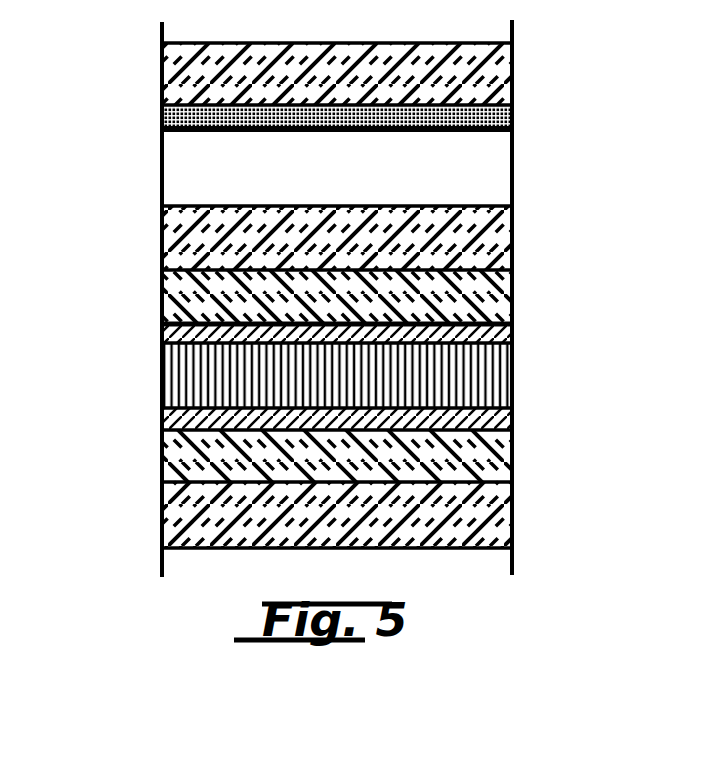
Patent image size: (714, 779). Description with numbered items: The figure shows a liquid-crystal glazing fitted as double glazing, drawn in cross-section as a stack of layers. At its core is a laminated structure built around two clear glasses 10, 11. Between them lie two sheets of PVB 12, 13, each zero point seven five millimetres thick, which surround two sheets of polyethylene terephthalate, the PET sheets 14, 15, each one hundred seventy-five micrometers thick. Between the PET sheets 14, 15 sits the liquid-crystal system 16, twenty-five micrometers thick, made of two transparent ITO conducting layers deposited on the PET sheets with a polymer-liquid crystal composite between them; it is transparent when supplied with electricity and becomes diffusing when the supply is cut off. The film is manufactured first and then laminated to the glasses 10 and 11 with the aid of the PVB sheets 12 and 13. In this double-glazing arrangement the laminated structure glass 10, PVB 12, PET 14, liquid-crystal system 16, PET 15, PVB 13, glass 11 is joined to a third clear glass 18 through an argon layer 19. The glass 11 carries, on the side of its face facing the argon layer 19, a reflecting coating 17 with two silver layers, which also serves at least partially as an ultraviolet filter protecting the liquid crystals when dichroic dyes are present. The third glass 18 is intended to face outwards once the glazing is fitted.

The clear glass 10 is at (492, 515).
The clear glass 11 is at (487, 232).
The PVB sheet 12 is at (490, 455).
The PVB sheet 13 is at (497, 298).
The PET sheet 14 is at (165, 420).
The PET sheet 15 is at (165, 330).
The liquid-crystal system 16 is at (492, 365).
The reflecting coating 17 is at (165, 113).
The third clear glass 18 is at (492, 68).
The argon layer 19 is at (487, 155).